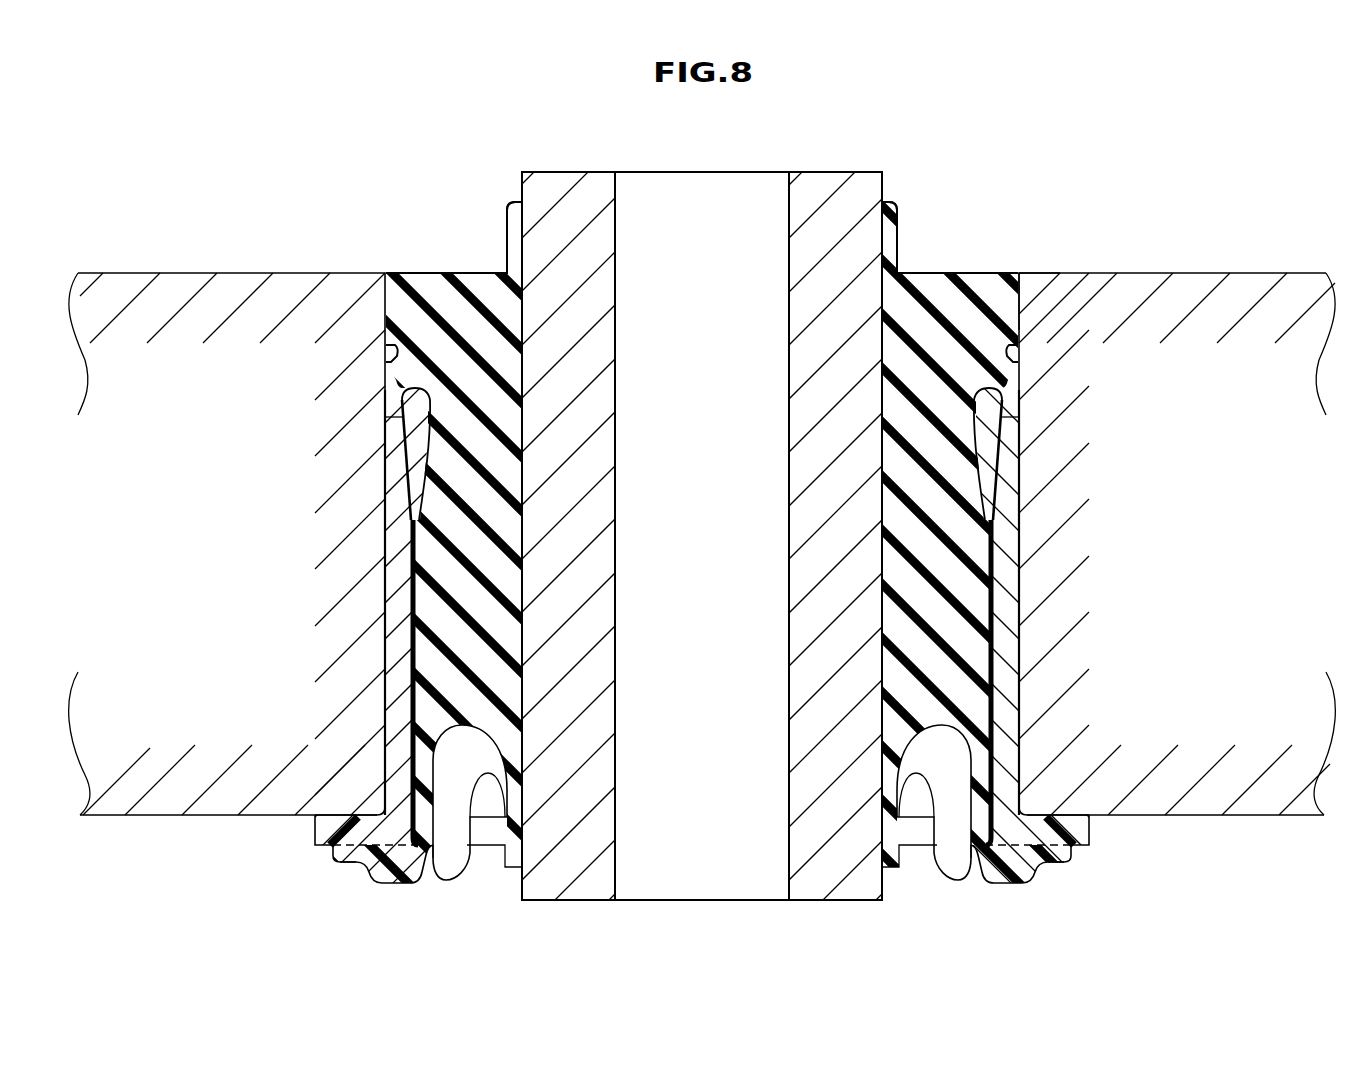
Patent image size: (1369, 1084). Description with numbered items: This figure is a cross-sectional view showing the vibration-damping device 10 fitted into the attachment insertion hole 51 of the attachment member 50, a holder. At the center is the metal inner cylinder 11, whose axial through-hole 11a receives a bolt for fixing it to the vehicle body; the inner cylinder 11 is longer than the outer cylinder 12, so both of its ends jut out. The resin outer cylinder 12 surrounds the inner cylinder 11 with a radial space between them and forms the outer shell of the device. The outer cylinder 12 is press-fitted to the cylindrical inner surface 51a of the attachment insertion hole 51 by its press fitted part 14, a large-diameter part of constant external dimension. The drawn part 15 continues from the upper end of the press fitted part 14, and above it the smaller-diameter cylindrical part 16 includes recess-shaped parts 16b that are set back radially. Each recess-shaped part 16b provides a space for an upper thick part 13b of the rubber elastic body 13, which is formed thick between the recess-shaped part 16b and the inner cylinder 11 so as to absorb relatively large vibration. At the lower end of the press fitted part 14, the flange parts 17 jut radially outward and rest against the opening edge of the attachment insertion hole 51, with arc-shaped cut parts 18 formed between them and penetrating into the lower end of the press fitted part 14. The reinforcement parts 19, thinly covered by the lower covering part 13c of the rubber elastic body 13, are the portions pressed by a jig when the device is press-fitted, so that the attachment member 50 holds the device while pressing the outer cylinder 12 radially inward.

The vibration-damping device 10 is at (972, 190).
The inner cylinder 11 is at (826, 172).
The through-hole 11a is at (615, 222).
The outer cylinder 12 is at (1020, 608).
The rubber elastic body 13 is at (430, 272).
The upper thick part 13b is at (462, 318).
The lower covering part 13c is at (383, 884).
The press fitted part 14 is at (1005, 688).
The drawn part 15 is at (1005, 480).
The cylindrical part 16 is at (990, 414).
The recess-shaped part 16b is at (418, 388).
The flange part 17 is at (332, 830).
The cut part 18 is at (487, 836).
The reinforcement part 19 is at (434, 884).
The attachment member 50 is at (1243, 272).
The attachment insertion hole 51 is at (1013, 272).
The inner surface 51a is at (395, 610).